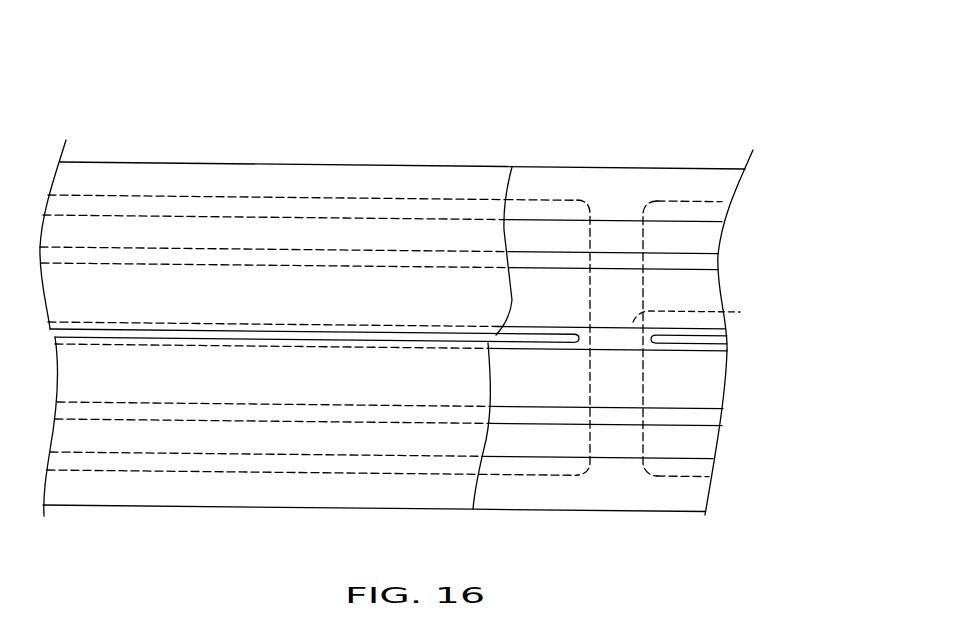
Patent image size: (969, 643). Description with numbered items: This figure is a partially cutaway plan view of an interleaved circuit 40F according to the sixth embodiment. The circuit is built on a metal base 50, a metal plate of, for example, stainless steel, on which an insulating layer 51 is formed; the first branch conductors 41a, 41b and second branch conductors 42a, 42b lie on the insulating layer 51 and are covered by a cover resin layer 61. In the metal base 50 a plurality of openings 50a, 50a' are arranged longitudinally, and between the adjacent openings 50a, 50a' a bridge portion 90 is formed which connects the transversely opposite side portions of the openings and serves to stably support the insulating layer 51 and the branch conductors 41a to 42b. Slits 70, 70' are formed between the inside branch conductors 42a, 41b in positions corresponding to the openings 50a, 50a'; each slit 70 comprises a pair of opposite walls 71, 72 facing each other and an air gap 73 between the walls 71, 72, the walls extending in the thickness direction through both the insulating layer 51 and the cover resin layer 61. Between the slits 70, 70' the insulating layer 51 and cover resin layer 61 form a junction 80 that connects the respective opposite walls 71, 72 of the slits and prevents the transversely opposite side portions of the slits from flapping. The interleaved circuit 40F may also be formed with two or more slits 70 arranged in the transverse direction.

The interleaved circuit 40F is at (453, 118).
The cover resin layer 61 is at (323, 180).
The slit 70' is at (273, 304).
The opening 50a' is at (530, 226).
The insulating layer 51 is at (622, 184).
The metal base 50 is at (665, 182).
The opening 50a is at (726, 233).
The first branch conductor 41a is at (707, 243).
The second branch conductor 42a is at (707, 290).
The bridge portion 90 is at (704, 312).
The slit 70 is at (427, 340).
The air gap 73 is at (352, 340).
The opposite wall 71 is at (405, 340).
The opposite wall 72 is at (390, 337).
The junction 80 is at (620, 338).
The first branch conductor 41b is at (722, 384).
The second branch conductor 42b is at (703, 446).